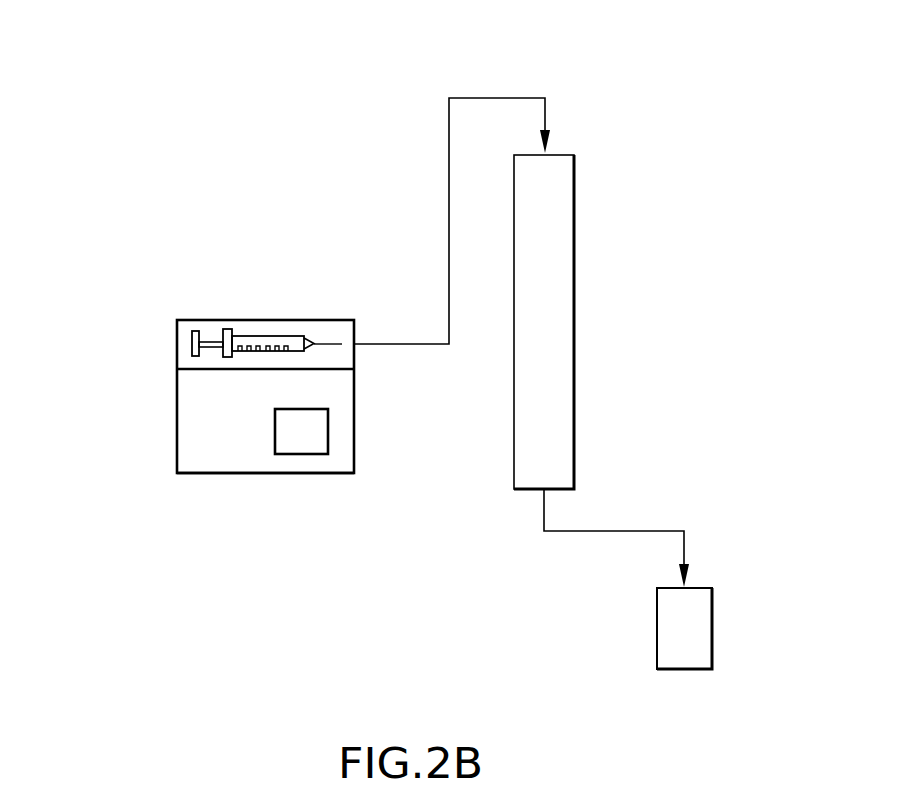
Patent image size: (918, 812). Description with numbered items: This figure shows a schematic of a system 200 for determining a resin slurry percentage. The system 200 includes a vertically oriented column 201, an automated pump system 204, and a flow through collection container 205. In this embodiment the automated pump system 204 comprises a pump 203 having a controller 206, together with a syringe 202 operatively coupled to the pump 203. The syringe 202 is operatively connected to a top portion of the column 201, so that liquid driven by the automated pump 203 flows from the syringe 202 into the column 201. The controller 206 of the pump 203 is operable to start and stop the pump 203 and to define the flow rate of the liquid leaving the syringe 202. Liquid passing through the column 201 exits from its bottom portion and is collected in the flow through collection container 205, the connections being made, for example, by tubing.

The system 200 is at (683, 105).
The column 201 is at (575, 297).
The syringe 202 is at (177, 343).
The pump 203 is at (177, 422).
The automated pump system 204 is at (85, 322).
The flow through collection container 205 is at (712, 625).
The controller 206 is at (303, 454).